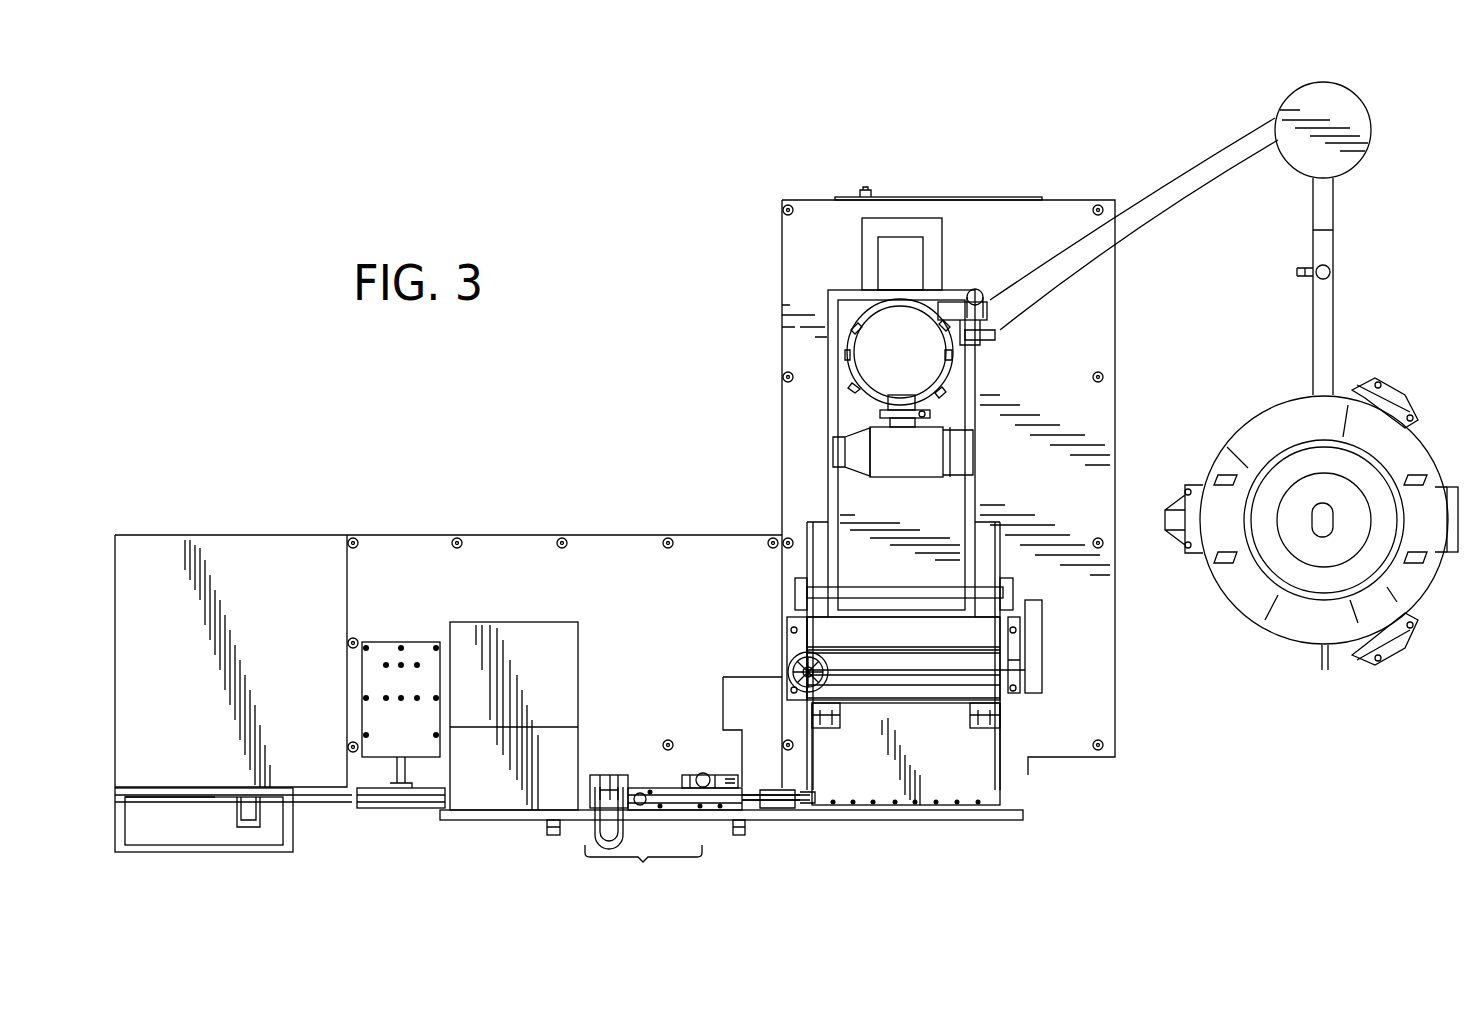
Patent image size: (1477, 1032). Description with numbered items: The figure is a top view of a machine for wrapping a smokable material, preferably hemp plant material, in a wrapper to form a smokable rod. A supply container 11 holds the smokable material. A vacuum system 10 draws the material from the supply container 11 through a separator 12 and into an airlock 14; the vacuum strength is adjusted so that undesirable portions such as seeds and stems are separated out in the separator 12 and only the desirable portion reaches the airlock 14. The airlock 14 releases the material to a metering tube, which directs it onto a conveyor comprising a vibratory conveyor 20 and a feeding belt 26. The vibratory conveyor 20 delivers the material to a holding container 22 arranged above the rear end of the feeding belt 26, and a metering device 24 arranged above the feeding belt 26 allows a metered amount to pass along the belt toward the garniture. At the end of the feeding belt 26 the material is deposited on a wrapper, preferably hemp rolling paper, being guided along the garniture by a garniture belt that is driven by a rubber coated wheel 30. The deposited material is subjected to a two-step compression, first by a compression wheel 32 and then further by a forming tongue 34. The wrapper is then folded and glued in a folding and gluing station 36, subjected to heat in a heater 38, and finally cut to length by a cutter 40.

The vacuum system 10 is at (1222, 102).
The supply container 11 is at (1275, 452).
The separator 12 is at (1373, 122).
The airlock 14 is at (900, 300).
The vibratory conveyor 20 is at (827, 423).
The holding container 22 is at (807, 613).
The metering device 24 is at (930, 653).
The feeding belt 26 is at (987, 763).
The rubber coated wheel 30 is at (398, 803).
The compression wheel 32 is at (768, 808).
The forming tongue 34 is at (718, 790).
The folding and gluing station 36 is at (643, 862).
The heater 38 is at (493, 790).
The cutter 40 is at (247, 825).